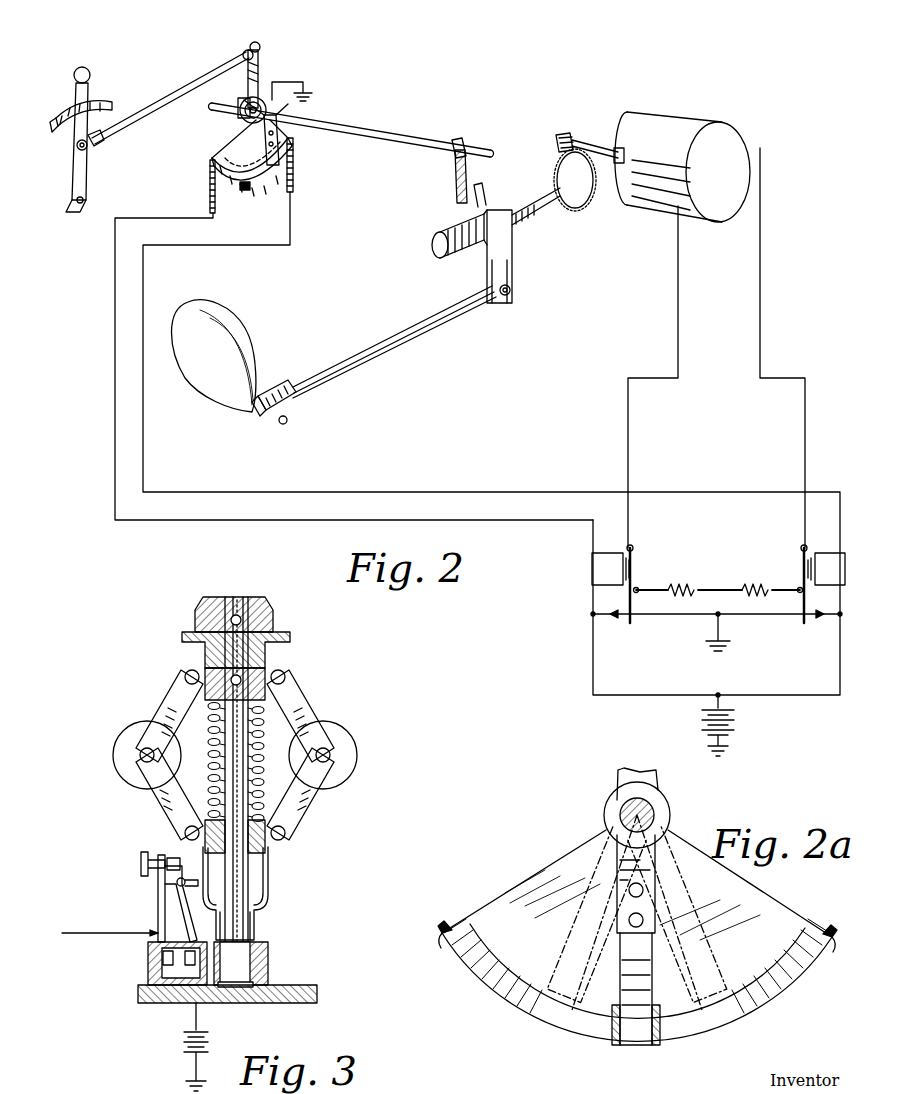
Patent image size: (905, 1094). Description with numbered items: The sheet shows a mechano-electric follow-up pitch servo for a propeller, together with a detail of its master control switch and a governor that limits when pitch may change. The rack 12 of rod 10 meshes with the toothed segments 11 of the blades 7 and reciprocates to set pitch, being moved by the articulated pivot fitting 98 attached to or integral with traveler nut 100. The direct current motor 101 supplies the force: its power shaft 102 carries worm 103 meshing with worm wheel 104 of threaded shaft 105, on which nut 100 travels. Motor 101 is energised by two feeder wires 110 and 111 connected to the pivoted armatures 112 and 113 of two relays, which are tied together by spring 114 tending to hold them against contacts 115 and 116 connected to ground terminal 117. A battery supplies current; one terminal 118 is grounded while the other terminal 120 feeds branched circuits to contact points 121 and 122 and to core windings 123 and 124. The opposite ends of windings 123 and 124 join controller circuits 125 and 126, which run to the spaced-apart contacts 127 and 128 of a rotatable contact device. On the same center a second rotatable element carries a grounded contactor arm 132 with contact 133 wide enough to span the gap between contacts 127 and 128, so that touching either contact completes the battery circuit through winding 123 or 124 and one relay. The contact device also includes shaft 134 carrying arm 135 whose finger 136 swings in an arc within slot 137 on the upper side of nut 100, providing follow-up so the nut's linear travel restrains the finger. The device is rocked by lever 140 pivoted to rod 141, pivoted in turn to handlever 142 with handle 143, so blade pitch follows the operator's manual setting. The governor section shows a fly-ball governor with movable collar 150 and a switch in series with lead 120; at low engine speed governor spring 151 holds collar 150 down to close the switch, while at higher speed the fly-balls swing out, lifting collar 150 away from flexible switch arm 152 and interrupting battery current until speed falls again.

In FIG. 2, the blades 7 is at (212, 330).
In FIG. 2, the rod 10 is at (355, 363).
In FIG. 2, the toothed segments 11 is at (286, 424).
In FIG. 2, the rack 12 is at (262, 416).
In FIG. 2, the articulated pivot fitting 98 is at (513, 280).
In FIG. 2, the traveler nut 100 is at (462, 228).
In FIG. 2, the direct current motor 101 is at (680, 120).
In FIG. 2, the power shaft 102 is at (592, 146).
In FIG. 2, the worm 103 is at (566, 133).
In FIG. 2, the worm wheel 104 is at (588, 198).
In FIG. 2, the threaded shaft 105 is at (545, 208).
In FIG. 2, the feeder wire 110 is at (676, 318).
In FIG. 2, the feeder wire 111 is at (760, 318).
In FIG. 2, the armature 112 is at (636, 575).
In FIG. 2, the armature 113 is at (800, 556).
In FIG. 2, the spring 114 is at (702, 586).
In FIG. 2, the contact 115 is at (634, 618).
In FIG. 2, the contact 116 is at (800, 622).
In FIG. 2, the ground terminal 117 is at (720, 630).
In FIG. 2, the battery terminal 118 is at (735, 742).
In FIG. 2, the battery terminal 120 is at (716, 690).
In FIG. 3, the battery terminal 120 is at (84, 933).
In FIG. 2, the contact point 121 is at (620, 620).
In FIG. 2, the contact point 122 is at (814, 620).
In FIG. 2, the core winding 123 is at (600, 570).
In FIG. 2, the core winding 124 is at (832, 550).
In FIG. 2, the controller circuit 125 is at (346, 520).
In FIG. 2A, the controller circuit 125 is at (445, 953).
In FIG. 2, the controller circuit 126 is at (465, 492).
In FIG. 2A, the controller circuit 126 is at (830, 957).
In FIG. 2, the contact 127 is at (210, 205).
In FIG. 2A, the contact 127 is at (510, 992).
In FIG. 2, the contact 128 is at (284, 170).
In FIG. 2A, the contact 128 is at (755, 995).
In FIG. 2, the contactor arm 132 is at (277, 124).
In FIG. 2A, the contactor arm 132 is at (622, 860).
In FIG. 2, the contact 133 is at (246, 192).
In FIG. 2A, the contact 133 is at (556, 1022).
In FIG. 2, the shaft 134 is at (370, 131).
In FIG. 2A, the shaft 134 is at (648, 812).
In FIG. 2, the arm 135 is at (456, 178).
In FIG. 2, the finger 136 is at (488, 195).
In FIG. 2, the slot 137 is at (468, 154).
In FIG. 2, the lever 140 is at (252, 50).
In FIG. 2A, the lever 140 is at (623, 780).
In FIG. 2, the rod 141 is at (140, 105).
In FIG. 2, the handlever 142 is at (78, 160).
In FIG. 2, the handle 143 is at (90, 70).
In FIG. 3, the collar 150 is at (270, 872).
In FIG. 3, the governor spring 151 is at (180, 708).
In FIG. 3, the flexible switch arm 152 is at (178, 922).